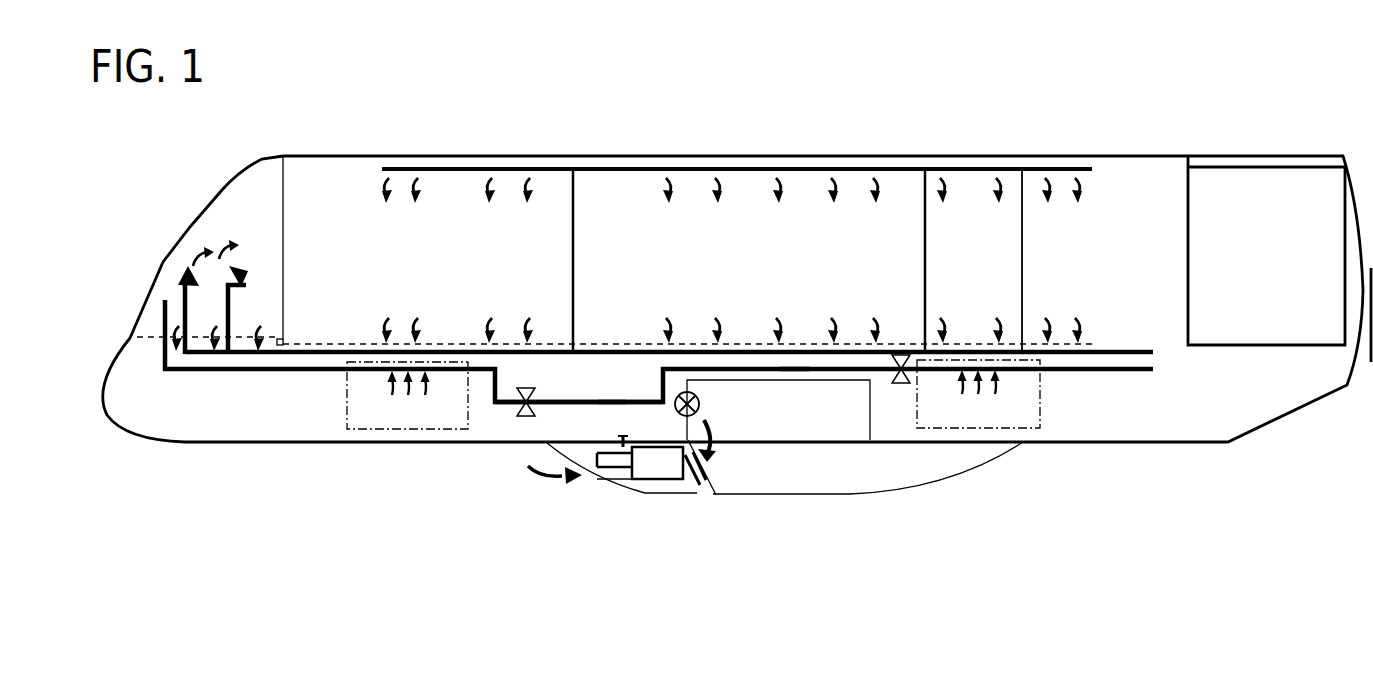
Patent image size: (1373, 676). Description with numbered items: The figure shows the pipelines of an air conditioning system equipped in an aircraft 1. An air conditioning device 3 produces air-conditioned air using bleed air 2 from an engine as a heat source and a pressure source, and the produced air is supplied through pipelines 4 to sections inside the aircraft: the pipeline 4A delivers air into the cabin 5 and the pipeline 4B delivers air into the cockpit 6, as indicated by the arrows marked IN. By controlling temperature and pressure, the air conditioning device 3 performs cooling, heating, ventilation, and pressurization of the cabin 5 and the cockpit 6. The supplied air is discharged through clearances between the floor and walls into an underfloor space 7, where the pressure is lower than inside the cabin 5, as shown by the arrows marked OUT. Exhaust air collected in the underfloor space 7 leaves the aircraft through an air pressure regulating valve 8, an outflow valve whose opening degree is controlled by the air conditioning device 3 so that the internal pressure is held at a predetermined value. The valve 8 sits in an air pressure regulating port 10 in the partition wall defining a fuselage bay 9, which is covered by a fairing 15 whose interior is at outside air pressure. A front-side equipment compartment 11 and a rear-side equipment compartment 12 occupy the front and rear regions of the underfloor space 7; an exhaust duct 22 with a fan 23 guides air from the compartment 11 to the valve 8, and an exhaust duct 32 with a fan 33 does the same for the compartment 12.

The aircraft 1 is at (851, 108).
The bleed air 2 is at (545, 478).
The air conditioning device 3 is at (672, 482).
The pipelines 4 is at (659, 246).
The pipeline 4A is at (980, 167).
The pipeline 4B is at (230, 308).
The cabin 5 is at (758, 272).
The cockpit 6 is at (253, 224).
The underfloor space 7 is at (602, 390).
The air pressure regulating valve 8 is at (709, 412).
The fuselage bay 9 is at (799, 424).
The air pressure regulating port 10 is at (719, 413).
The front-side equipment compartment 11 is at (345, 420).
The rear-side equipment compartment 12 is at (1040, 408).
The fairing 15 is at (850, 495).
The exhaust duct 22 is at (612, 401).
The fan 23 is at (522, 388).
The exhaust duct 32 is at (793, 367).
The fan 33 is at (909, 356).